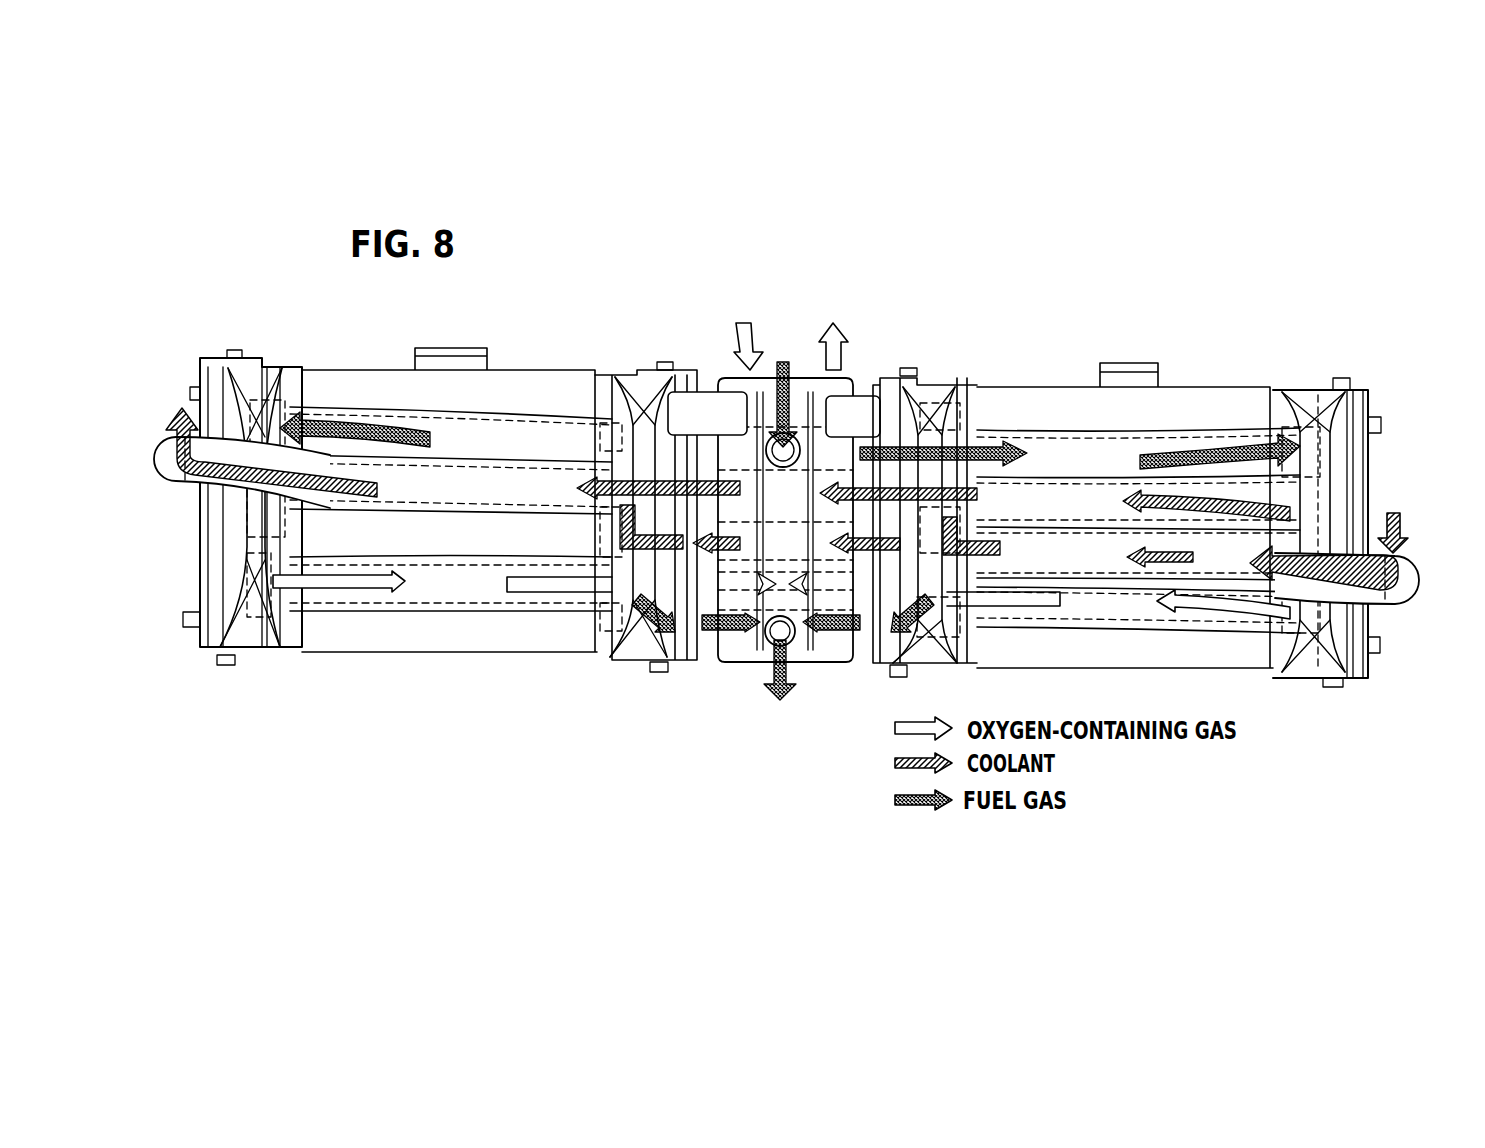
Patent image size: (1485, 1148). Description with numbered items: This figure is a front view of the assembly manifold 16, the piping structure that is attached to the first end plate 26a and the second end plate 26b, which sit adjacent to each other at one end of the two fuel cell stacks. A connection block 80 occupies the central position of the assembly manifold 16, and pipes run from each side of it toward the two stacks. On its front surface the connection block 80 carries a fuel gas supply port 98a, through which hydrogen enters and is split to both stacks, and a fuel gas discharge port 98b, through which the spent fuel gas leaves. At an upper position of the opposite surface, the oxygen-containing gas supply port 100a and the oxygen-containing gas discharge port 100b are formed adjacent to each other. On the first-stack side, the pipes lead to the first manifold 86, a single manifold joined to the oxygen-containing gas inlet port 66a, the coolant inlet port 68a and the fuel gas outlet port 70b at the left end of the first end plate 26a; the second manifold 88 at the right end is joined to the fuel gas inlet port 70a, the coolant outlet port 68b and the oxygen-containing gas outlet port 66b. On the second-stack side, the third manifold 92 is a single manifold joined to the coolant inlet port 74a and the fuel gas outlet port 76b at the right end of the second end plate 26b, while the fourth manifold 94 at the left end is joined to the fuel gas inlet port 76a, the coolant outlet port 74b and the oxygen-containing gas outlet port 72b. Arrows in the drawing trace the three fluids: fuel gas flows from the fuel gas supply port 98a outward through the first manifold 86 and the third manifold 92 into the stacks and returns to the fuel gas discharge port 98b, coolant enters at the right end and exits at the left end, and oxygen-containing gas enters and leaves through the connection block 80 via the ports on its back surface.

The assembly manifold 16 is at (442, 302).
The first end plate 26a is at (1199, 405).
The second end plate 26b is at (532, 385).
The oxygen-containing gas inlet port 66a is at (978, 422).
The oxygen-containing gas outlet port 66b is at (1264, 633).
The coolant inlet port 68a is at (908, 512).
The coolant outlet port 68b is at (1258, 549).
The fuel gas inlet port 70a is at (1300, 393).
The fuel gas outlet port 70b is at (973, 640).
The oxygen-containing gas outlet port 72b is at (245, 565).
The coolant inlet port 74a is at (603, 533).
The coolant outlet port 74b is at (250, 540).
The fuel gas inlet port 76a is at (305, 404).
The fuel gas outlet port 76b is at (586, 618).
The connection block 80 is at (822, 668).
The first manifold 86 is at (937, 394).
The second manifold 88 is at (1318, 404).
The third manifold 92 is at (637, 392).
The fourth manifold 94 is at (263, 396).
The fuel gas supply port 98a is at (784, 468).
The fuel gas discharge port 98b is at (768, 648).
The oxygen-containing gas supply port 100a is at (738, 336).
The oxygen-containing gas discharge port 100b is at (843, 344).